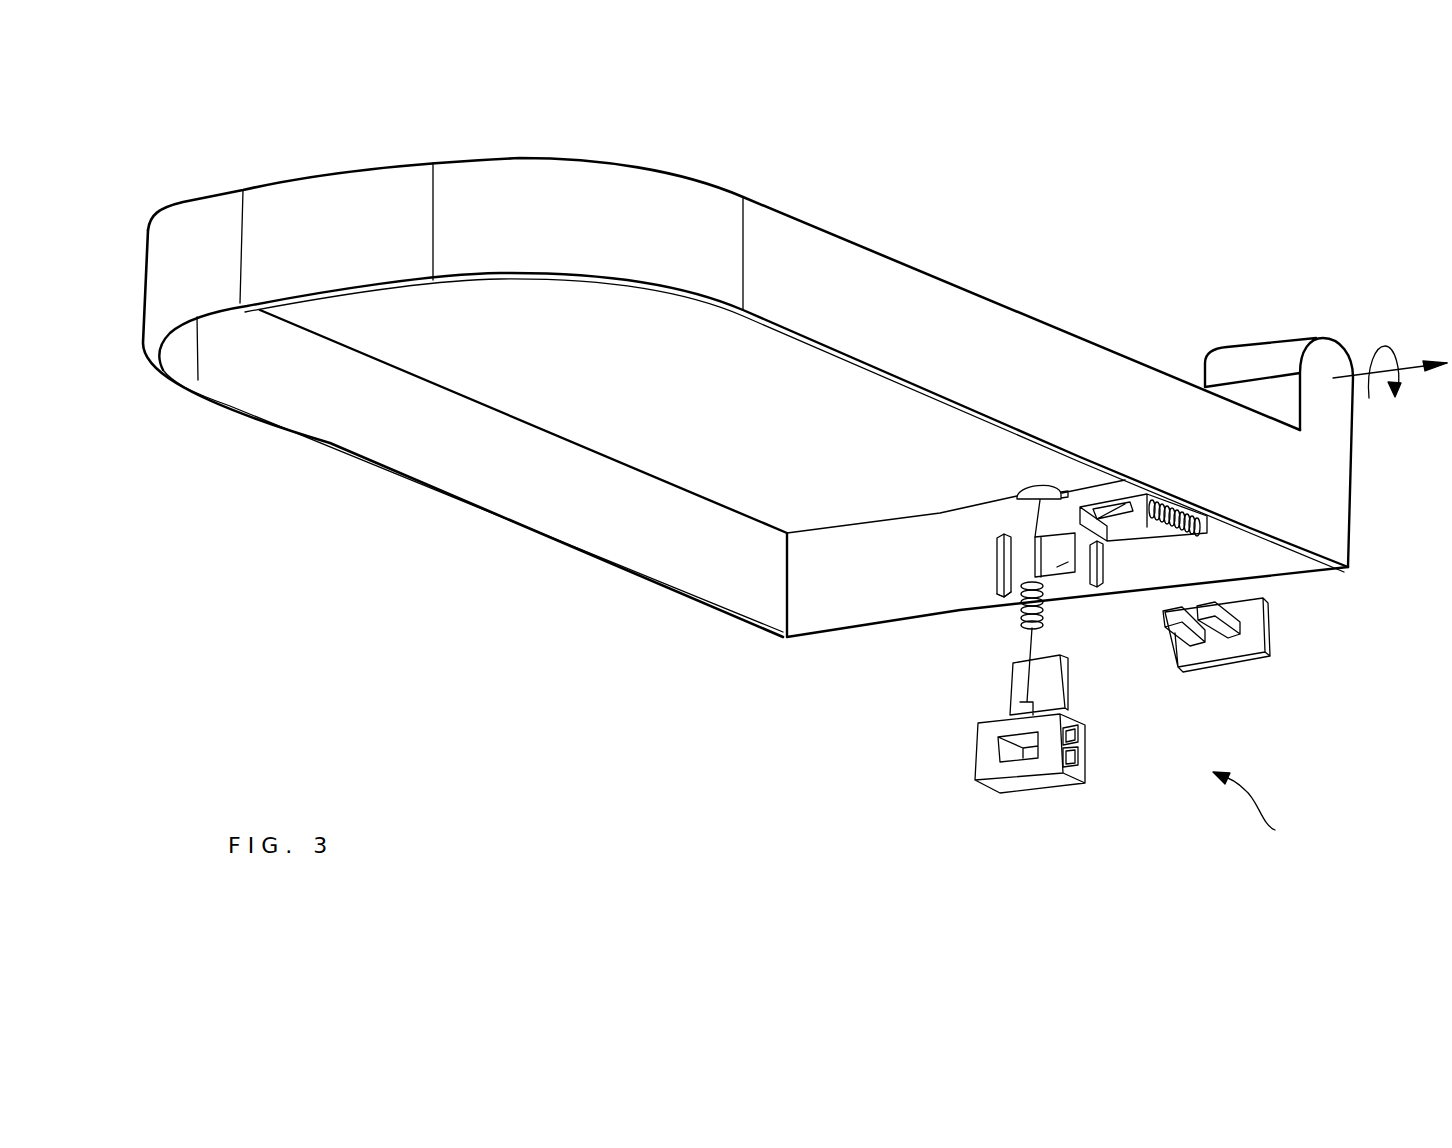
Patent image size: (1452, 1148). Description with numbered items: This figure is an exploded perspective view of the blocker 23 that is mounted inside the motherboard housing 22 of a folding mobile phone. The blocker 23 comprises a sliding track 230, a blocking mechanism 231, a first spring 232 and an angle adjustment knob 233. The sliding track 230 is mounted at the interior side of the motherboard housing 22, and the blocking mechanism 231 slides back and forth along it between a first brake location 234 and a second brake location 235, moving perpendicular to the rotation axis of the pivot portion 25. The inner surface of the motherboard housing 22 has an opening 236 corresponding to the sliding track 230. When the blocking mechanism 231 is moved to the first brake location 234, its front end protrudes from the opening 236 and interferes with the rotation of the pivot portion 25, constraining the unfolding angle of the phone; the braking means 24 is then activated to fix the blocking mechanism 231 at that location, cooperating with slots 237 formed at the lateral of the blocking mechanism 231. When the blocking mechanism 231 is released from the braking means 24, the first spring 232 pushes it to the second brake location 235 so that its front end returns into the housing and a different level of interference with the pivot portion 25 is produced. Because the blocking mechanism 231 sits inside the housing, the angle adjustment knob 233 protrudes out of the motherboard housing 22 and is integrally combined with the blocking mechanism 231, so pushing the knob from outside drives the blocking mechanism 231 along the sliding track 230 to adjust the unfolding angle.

The motherboard housing 22 is at (337, 190).
The blocker 23 is at (1140, 712).
The braking means 24 is at (1207, 537).
The pivot portion 25 is at (1340, 408).
The sliding track 230 is at (995, 579).
The blocking mechanism 231 is at (1067, 685).
The first spring 232 is at (1043, 612).
The angle adjustment knob 233 is at (1227, 663).
The first brake location 234 is at (997, 535).
The second brake location 235 is at (993, 585).
The opening 236 is at (958, 505).
The slots 237 is at (1078, 755).